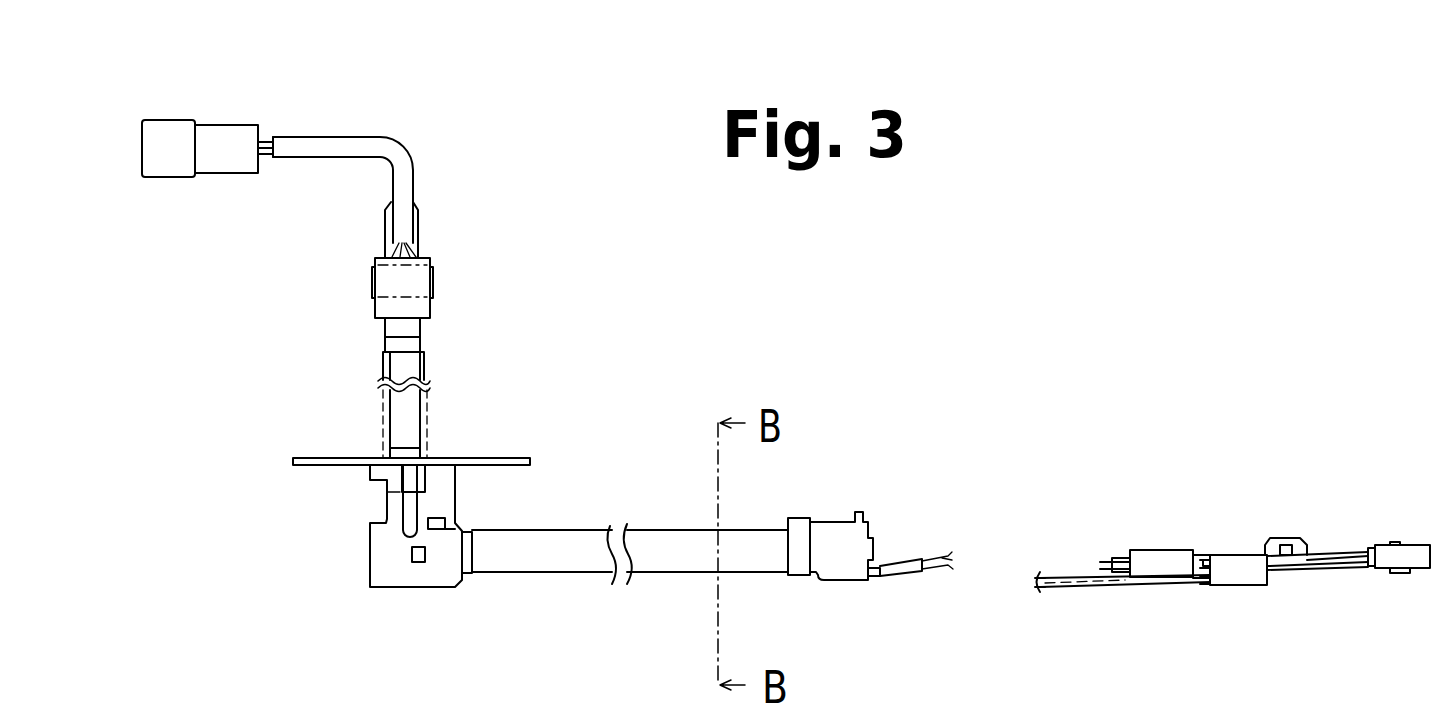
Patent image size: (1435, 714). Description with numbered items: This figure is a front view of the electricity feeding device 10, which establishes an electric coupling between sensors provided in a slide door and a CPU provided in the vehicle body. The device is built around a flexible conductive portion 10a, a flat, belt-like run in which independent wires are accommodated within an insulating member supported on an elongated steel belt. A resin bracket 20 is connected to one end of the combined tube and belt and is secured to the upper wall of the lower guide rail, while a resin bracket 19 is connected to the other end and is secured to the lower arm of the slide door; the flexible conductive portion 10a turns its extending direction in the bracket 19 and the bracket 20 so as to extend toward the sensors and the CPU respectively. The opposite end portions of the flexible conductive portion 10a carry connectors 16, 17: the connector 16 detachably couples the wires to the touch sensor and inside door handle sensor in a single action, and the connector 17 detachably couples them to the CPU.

The electricity feeding device 10 is at (607, 485).
The flexible conductive portion 10a is at (552, 540).
The connector 16 is at (1402, 558).
The connector 17 is at (168, 132).
The bracket 19 is at (838, 532).
The bracket 20 is at (410, 580).